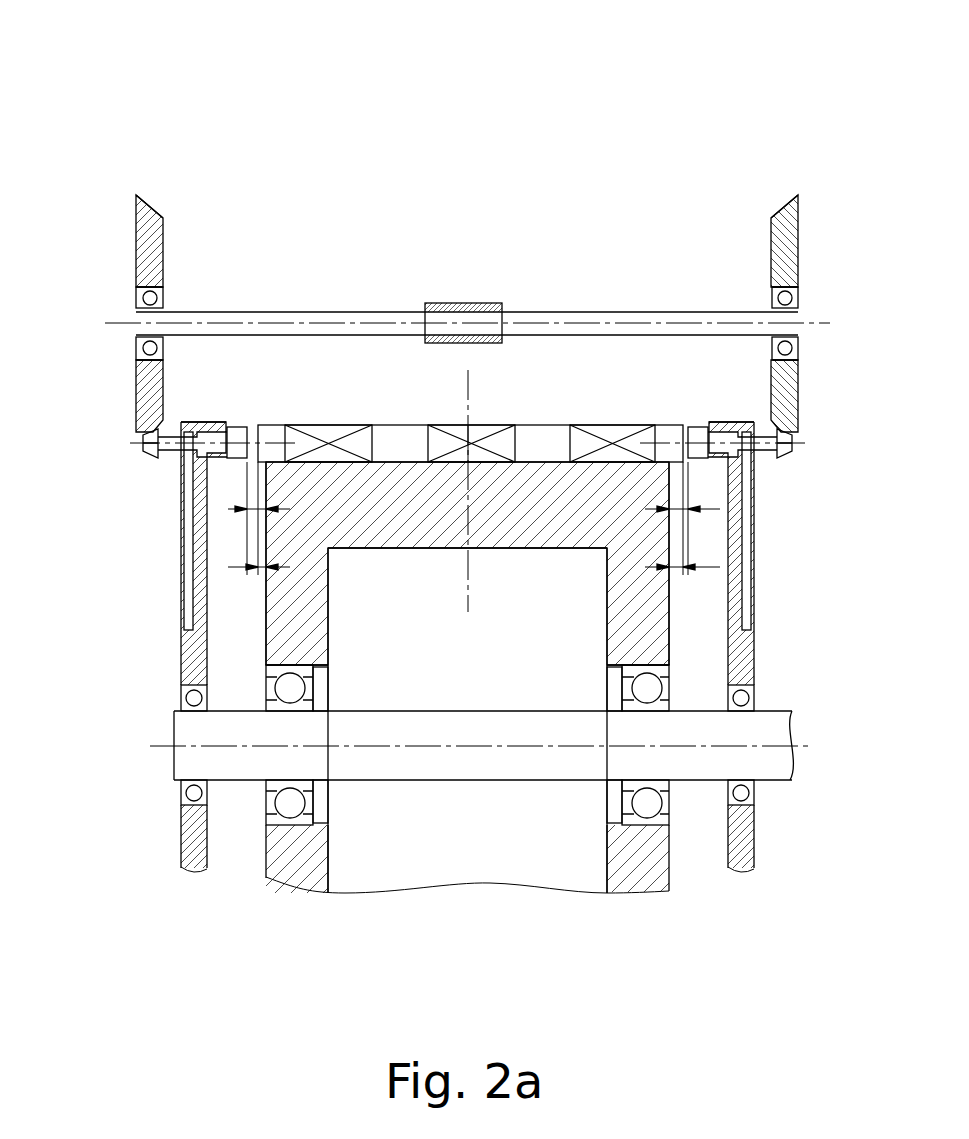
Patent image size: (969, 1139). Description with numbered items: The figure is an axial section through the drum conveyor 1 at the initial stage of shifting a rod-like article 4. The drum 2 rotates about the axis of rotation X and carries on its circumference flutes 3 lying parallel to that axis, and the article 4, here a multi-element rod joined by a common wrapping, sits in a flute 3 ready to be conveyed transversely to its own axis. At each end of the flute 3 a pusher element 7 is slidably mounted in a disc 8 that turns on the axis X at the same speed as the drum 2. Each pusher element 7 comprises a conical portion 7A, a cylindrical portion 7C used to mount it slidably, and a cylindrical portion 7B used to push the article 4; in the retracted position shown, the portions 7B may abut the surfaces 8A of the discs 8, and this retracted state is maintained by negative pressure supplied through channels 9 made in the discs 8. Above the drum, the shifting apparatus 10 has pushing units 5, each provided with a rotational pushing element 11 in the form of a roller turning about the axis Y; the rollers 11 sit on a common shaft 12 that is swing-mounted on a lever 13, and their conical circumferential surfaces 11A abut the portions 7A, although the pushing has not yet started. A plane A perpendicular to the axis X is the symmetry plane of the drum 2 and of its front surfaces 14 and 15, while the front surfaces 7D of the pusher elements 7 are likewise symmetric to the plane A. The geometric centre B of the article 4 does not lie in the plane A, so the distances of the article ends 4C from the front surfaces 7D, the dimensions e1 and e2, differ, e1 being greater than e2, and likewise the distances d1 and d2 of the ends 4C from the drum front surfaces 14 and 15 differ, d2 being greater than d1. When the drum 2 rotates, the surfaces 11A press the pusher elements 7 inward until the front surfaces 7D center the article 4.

The drum conveyor 1 is at (611, 932).
The drum 2 is at (293, 875).
The flute 3 is at (533, 460).
The rod-like article 4 is at (380, 407).
The ends of the rod-like article 4C is at (261, 448).
The pushing unit 5 is at (164, 142).
The pusher element 7 is at (164, 460).
The conical portion 7A is at (150, 455).
The cylindrical portion 7B is at (241, 440).
The cylindrical portion 7C is at (210, 440).
The front surface 7D is at (247, 430).
The disc 8 is at (184, 528).
The surface of the disc 8A is at (228, 437).
The channel 9 is at (184, 637).
The shifting apparatus 10 is at (395, 195).
The rotational pushing element 11 is at (140, 200).
The circumferential surface 11A is at (160, 205).
The shaft 12 is at (547, 317).
The lever 13 is at (482, 303).
The front surface of the drum 14 is at (265, 863).
The front surface of the drum 15 is at (668, 875).
The plane A is at (465, 414).
The geometric centre of the article B is at (468, 443).
The axis of rotation X is at (165, 748).
The axis of rotation of the roller Y is at (107, 321).
The dimension e1 is at (251, 518).
The dimension e2 is at (686, 518).
The distance d1 is at (252, 518).
The distance d2 is at (686, 518).